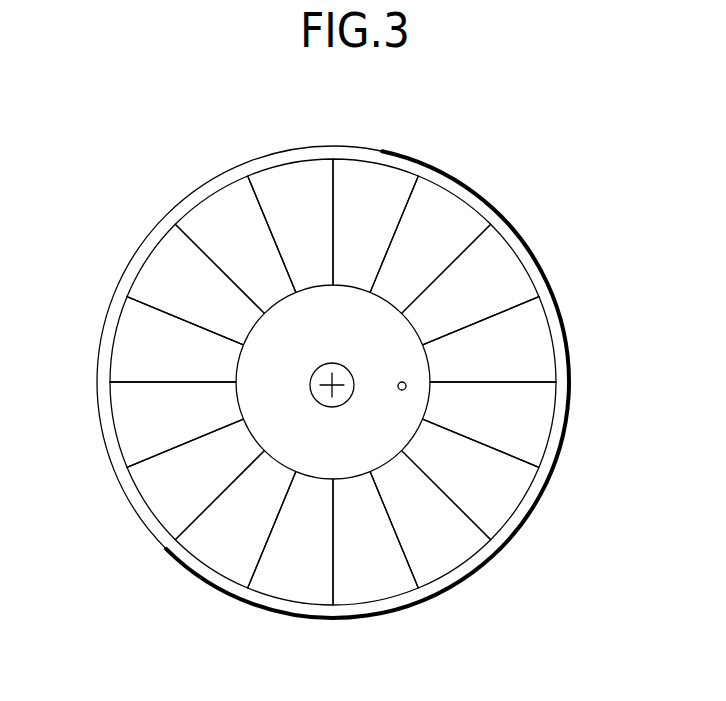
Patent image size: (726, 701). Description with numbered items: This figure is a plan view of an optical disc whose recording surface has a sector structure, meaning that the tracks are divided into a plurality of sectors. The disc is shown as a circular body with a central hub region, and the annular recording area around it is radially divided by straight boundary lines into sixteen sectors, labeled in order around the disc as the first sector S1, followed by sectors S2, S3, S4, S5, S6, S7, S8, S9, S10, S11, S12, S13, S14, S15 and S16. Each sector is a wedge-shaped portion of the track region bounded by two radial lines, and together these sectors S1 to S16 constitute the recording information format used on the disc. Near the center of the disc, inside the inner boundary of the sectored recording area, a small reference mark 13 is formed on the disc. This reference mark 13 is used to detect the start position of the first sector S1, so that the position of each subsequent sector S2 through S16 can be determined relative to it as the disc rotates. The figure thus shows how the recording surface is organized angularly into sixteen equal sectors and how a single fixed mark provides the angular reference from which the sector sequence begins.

The first sector S1 is at (542, 425).
The sector S2 is at (513, 502).
The sector S3 is at (462, 557).
The sector S4 is at (372, 593).
The sector S5 is at (282, 592).
The sector S6 is at (205, 550).
The sector S7 is at (155, 483).
The sector S8 is at (135, 410).
The sector S9 is at (135, 328).
The sector S10 is at (165, 267).
The sector S11 is at (217, 208).
The sector S12 is at (303, 168).
The sector S13 is at (373, 168).
The sector S14 is at (453, 208).
The sector S15 is at (513, 272).
The sector S16 is at (538, 343).
The reference mark 13 is at (400, 390).